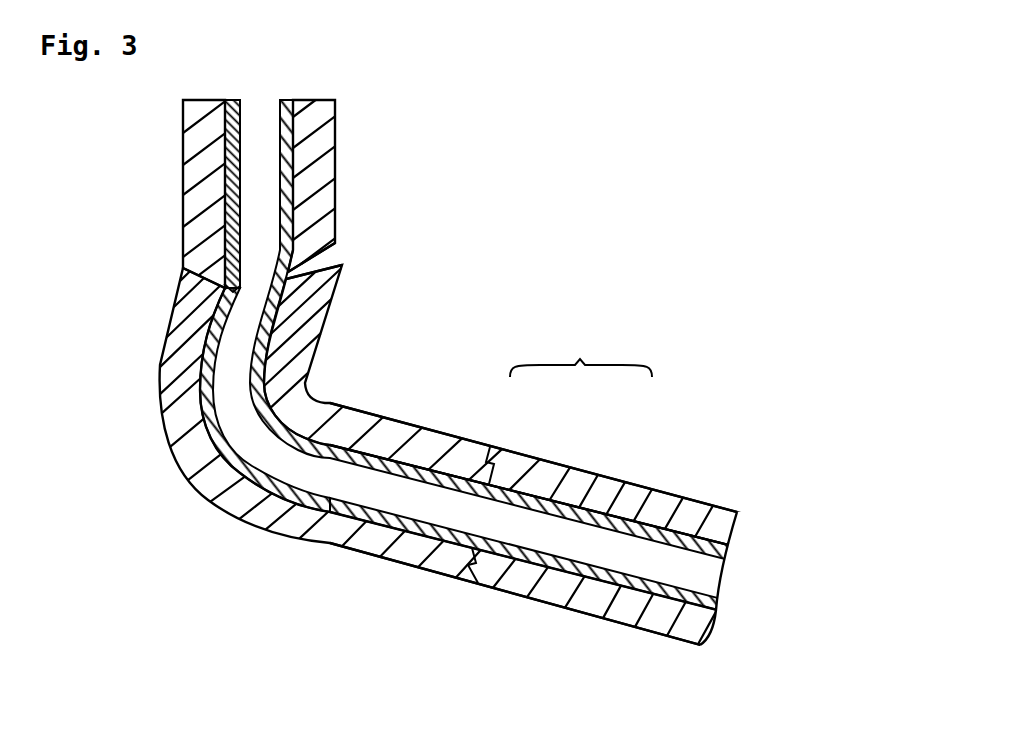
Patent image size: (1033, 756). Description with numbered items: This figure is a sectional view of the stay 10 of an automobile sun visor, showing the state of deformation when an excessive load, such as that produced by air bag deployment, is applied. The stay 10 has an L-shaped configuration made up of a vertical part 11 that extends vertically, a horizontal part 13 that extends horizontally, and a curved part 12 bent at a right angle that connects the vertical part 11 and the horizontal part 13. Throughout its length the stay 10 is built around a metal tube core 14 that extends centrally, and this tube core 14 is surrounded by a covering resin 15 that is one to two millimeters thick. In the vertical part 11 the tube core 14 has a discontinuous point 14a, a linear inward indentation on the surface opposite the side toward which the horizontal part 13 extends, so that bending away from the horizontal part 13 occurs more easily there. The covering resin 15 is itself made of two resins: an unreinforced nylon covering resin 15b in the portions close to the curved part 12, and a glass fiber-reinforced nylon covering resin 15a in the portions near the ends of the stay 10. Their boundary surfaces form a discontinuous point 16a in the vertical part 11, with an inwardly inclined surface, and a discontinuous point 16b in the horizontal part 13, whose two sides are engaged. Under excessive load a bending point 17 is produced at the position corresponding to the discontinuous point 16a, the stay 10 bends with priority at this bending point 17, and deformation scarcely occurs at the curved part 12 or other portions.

The stay 10 is at (636, 180).
The vertical part 11 is at (183, 153).
The curved part 12 is at (216, 483).
The horizontal part 13 is at (360, 555).
The tube core 14 is at (710, 600).
The discontinuous point 14a is at (220, 296).
The covering resin 15 is at (581, 347).
The covering resin 15a is at (338, 108).
The covering resin 15b is at (490, 446).
The discontinuous point 16a is at (225, 282).
The discontinuous point 16b is at (482, 578).
The bending point 17 is at (370, 243).